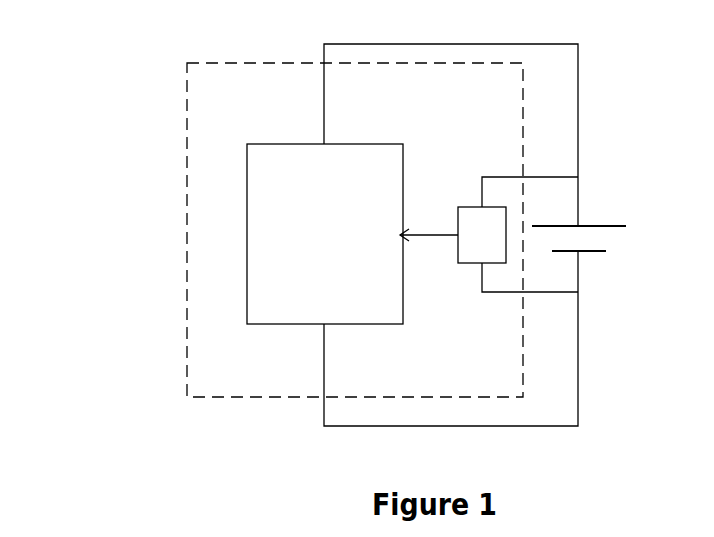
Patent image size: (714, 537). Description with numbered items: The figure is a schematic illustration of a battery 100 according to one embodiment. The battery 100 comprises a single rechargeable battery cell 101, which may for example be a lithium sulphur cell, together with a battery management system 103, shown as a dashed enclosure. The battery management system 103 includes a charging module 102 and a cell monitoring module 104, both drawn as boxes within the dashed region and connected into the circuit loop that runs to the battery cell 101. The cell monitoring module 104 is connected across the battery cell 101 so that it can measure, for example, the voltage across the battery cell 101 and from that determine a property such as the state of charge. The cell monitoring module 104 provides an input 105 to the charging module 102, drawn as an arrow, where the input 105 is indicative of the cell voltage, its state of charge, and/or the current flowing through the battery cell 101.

The battery 100 is at (128, 75).
The battery cell 101 is at (594, 226).
The charging module 102 is at (338, 144).
The battery management system 103 is at (248, 63).
The cell monitoring module 104 is at (470, 263).
The input 105 is at (419, 235).